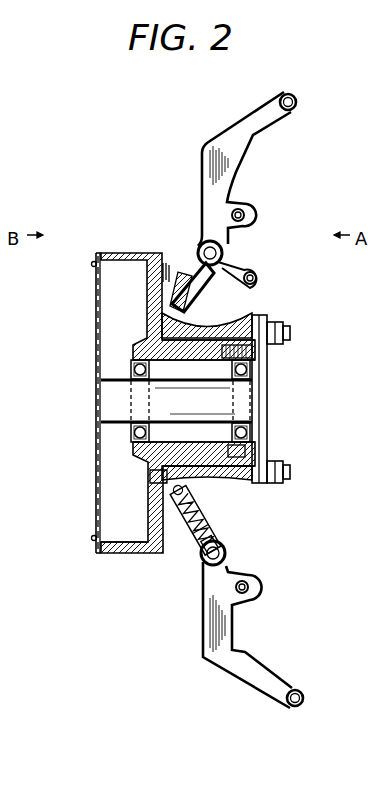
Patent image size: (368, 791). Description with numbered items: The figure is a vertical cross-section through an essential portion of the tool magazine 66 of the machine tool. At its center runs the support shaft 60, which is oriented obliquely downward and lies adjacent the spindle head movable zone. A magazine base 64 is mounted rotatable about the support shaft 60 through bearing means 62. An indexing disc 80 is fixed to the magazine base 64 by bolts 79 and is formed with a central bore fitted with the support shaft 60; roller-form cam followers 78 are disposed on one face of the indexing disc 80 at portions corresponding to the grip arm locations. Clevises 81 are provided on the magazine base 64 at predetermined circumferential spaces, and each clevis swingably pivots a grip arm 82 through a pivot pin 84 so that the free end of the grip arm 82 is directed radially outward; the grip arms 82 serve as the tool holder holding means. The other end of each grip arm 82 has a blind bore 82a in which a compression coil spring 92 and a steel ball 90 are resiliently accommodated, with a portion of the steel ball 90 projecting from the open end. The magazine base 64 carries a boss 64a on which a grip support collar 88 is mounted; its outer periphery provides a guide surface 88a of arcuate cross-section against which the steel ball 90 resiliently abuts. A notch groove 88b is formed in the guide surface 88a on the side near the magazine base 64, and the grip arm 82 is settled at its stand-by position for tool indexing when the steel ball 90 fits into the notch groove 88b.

The support shaft 60 is at (108, 397).
The bearing means 62 is at (135, 367).
The magazine base 64 is at (147, 352).
The boss 64a is at (150, 328).
The tool magazine 66 is at (100, 207).
The cam followers 78 is at (292, 338).
The bolts 79 is at (255, 353).
The indexing disc 80 is at (272, 326).
The clevises 81 is at (188, 246).
The grip arms 82 is at (228, 133).
The blind bore 82a is at (162, 554).
The pivot pins 84 is at (203, 185).
The grip support collar 88 is at (250, 316).
The guide surface 88a is at (232, 318).
The notch groove 88b is at (152, 313).
The steel ball 90 is at (122, 554).
The compression coil spring 92 is at (190, 556).